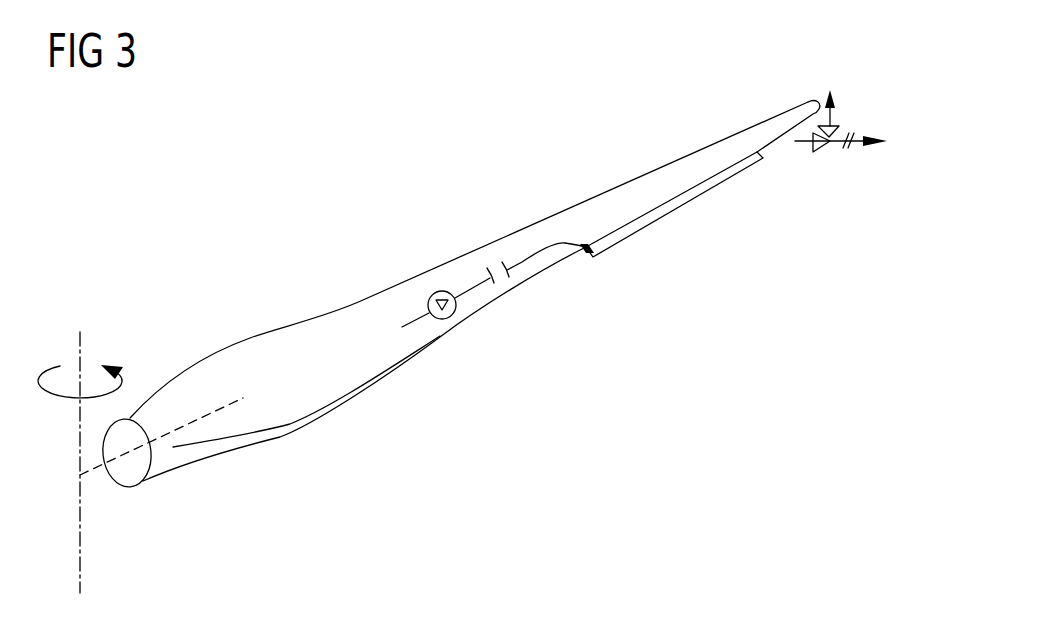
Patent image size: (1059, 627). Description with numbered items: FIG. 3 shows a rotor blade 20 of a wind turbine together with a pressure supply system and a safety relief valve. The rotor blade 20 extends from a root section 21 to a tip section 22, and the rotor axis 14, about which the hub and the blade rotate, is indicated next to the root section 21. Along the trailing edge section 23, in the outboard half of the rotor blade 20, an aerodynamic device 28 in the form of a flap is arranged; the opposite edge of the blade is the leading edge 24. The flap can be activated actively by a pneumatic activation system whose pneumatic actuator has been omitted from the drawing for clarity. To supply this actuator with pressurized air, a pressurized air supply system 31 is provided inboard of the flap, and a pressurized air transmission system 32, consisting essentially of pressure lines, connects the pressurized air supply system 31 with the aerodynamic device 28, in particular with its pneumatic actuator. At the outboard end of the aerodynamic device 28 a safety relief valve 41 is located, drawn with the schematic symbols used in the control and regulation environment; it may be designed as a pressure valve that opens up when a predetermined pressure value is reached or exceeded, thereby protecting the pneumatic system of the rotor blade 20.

The rotor axis 14 is at (80, 339).
The rotor blade 20 is at (450, 275).
The root section 21 is at (143, 415).
The tip section 22 is at (782, 123).
The trailing edge section 23 is at (283, 431).
The leading edge 24 is at (280, 334).
The aerodynamic device 28 is at (658, 210).
The pressurized air supply system 31 is at (437, 291).
The pressurized air transmission system 32 is at (534, 258).
The safety relief valve 41 is at (851, 104).